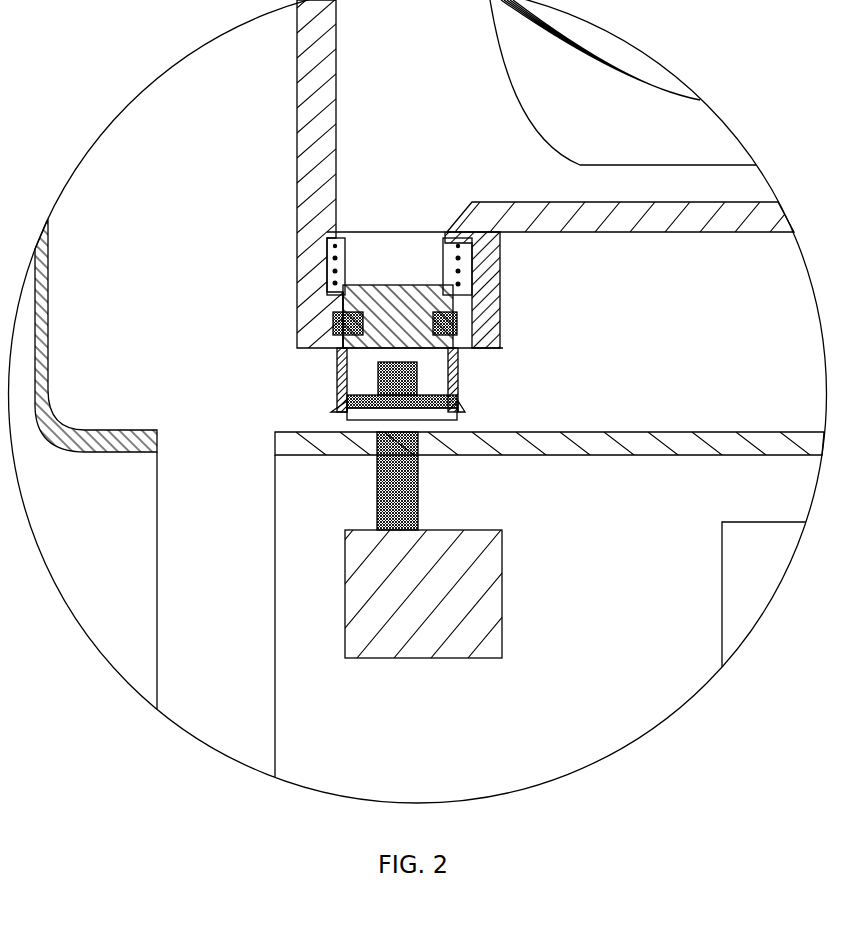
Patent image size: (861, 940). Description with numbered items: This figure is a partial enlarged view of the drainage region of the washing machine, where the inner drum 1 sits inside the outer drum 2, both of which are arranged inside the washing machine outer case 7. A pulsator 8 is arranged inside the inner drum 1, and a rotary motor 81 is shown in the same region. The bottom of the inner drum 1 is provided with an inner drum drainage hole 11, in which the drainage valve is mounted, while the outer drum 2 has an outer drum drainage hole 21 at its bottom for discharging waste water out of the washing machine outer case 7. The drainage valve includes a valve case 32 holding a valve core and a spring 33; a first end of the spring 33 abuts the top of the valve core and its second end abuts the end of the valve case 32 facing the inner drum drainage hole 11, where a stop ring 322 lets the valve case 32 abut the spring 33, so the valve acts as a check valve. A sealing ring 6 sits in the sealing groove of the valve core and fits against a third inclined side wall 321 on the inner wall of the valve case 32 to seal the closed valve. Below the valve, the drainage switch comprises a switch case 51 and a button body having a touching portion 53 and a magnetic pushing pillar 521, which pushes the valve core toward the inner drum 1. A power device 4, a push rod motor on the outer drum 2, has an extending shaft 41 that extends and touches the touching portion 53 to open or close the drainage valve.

The inner drum 1 is at (320, 177).
The outer drum 2 is at (48, 307).
The outer drum drainage hole 21 is at (213, 437).
The pulsator 8 is at (533, 93).
The rotary motor 81 is at (733, 633).
The inner drum drainage hole 11 is at (423, 217).
The valve case 32 is at (487, 283).
The stop ring 322 is at (345, 232).
The spring 33 is at (337, 262).
The washing machine outer case 7 is at (422, 285).
The sealing ring 6 is at (457, 323).
The third inclined side wall 321 is at (310, 330).
The switch case 51 is at (460, 405).
The pushing pillar 521 is at (378, 377).
The touching portion 53 is at (457, 412).
The extending shaft 41 is at (418, 497).
The power device 4 is at (502, 600).